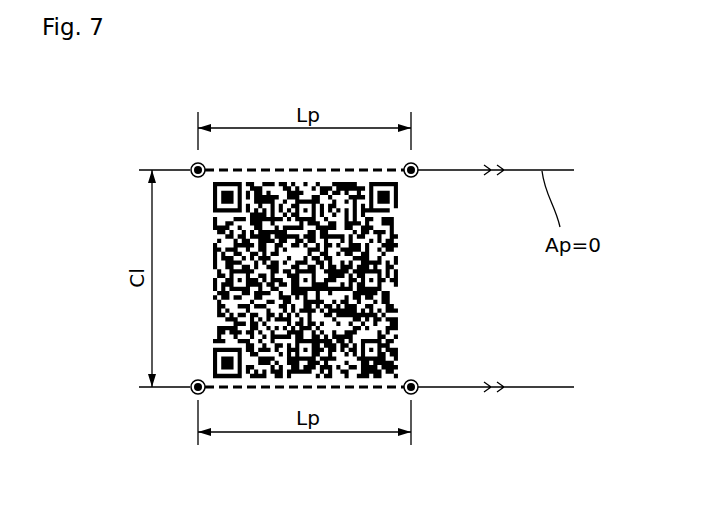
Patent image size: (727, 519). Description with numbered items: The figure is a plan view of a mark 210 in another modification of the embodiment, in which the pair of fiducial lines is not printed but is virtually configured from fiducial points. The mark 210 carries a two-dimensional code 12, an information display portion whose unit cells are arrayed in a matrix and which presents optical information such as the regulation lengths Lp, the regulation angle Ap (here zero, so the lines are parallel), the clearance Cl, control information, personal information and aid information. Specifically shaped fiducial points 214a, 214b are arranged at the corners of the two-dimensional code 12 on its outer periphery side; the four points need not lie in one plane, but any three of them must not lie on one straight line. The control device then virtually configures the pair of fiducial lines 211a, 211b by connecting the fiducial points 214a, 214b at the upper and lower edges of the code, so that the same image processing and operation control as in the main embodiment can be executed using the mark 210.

The two-dimensional code 12 is at (416, 253).
The mark 210 is at (465, 152).
The fiducial line 211a is at (360, 166).
The fiducial line 211b is at (248, 390).
The fiducial point 214a is at (191, 167).
The fiducial point 214b is at (418, 167).